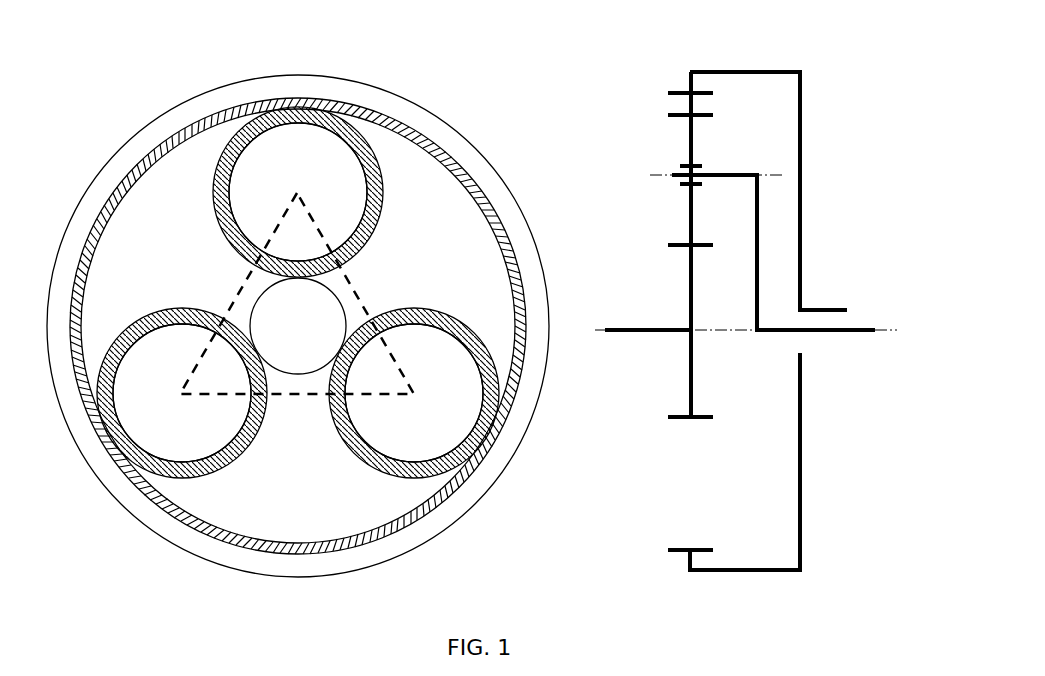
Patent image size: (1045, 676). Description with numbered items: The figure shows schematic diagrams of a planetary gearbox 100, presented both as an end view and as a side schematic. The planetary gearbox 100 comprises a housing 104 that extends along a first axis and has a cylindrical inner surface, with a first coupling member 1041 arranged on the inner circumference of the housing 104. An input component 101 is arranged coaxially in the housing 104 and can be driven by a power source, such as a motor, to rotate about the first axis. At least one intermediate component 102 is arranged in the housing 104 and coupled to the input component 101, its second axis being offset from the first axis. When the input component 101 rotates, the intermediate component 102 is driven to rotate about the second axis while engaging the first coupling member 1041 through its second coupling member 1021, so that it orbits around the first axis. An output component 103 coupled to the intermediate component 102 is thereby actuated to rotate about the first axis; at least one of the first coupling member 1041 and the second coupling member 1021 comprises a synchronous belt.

The planetary gearbox 100 is at (450, 44).
The input component 101 is at (343, 280).
The intermediate component 102 is at (343, 205).
The second coupling member 1021 is at (360, 233).
The output component 103 is at (293, 358).
The housing 104 is at (398, 98).
The first coupling member 1041 is at (407, 127).